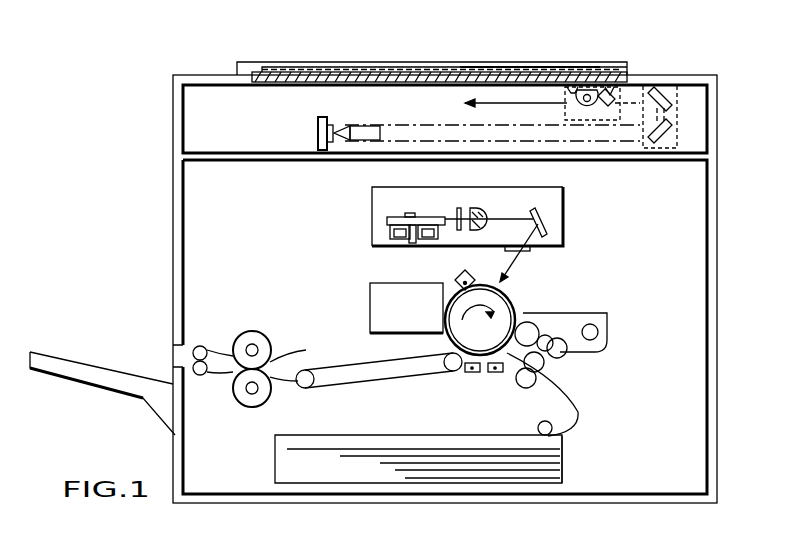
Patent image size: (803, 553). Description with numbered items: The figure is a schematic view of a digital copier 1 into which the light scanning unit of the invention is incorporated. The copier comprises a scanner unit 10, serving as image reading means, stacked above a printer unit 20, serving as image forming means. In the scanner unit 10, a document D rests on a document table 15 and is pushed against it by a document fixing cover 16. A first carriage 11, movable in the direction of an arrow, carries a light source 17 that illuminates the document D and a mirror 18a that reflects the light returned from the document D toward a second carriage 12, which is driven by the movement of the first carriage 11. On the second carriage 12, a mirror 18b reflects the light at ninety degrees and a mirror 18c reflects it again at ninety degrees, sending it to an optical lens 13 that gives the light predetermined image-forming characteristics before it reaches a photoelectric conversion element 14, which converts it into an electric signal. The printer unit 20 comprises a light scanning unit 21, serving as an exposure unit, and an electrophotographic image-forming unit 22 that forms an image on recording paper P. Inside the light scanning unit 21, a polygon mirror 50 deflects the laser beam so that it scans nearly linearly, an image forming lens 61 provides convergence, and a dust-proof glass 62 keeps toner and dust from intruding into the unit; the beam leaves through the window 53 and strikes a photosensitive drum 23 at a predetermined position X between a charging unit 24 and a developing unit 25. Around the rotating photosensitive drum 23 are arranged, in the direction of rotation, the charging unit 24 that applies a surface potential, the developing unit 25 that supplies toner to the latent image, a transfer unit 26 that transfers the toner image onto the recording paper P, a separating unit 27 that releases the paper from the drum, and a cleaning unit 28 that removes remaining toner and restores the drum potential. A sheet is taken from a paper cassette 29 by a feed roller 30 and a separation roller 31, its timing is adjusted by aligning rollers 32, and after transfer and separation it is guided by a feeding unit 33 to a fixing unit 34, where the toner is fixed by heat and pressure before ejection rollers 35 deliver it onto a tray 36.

The digital copier 1 is at (170, 64).
The scanner unit 10 is at (192, 117).
The first carriage 11 is at (558, 62).
The second carriage 12 is at (691, 145).
The optical lens 13 is at (348, 126).
The photoelectric conversion element 14 is at (318, 134).
The document table 15 is at (326, 70).
The document fixing cover 16 is at (433, 70).
The document D is at (506, 68).
The light source 17 is at (590, 88).
The mirror 18a is at (618, 88).
The mirror 18b is at (671, 100).
The mirror 18c is at (671, 127).
The printer unit 20 is at (707, 409).
The light scanning unit 21 is at (562, 218).
The image-forming unit 22 is at (587, 375).
The photosensitive drum 23 is at (514, 304).
The charging unit 24 is at (456, 276).
The developing unit 25 is at (600, 312).
The transfer unit 26 is at (494, 374).
The separating unit 27 is at (454, 372).
The cleaning unit 28 is at (370, 309).
The paper cassette 29 is at (327, 472).
The recording paper P is at (458, 472).
The feed roller 30 is at (564, 446).
The separation roller 31 is at (556, 428).
The aligning rollers 32 is at (526, 387).
The feeding unit 33 is at (350, 382).
The fixing unit 34 is at (252, 330).
The ejection rollers 35 is at (200, 375).
The tray 36 is at (88, 389).
The polygon mirror 50 is at (388, 213).
The exposure window 53 is at (506, 252).
The image forming lens 61 is at (482, 208).
The dust-proof glass 62 is at (460, 208).
The predetermined position X is at (498, 282).